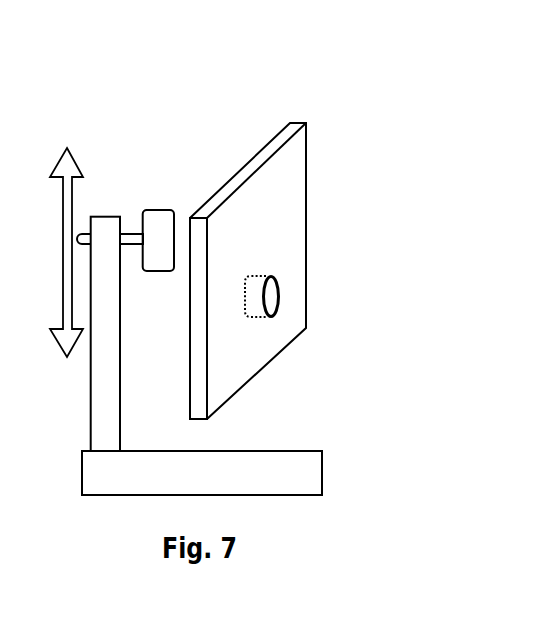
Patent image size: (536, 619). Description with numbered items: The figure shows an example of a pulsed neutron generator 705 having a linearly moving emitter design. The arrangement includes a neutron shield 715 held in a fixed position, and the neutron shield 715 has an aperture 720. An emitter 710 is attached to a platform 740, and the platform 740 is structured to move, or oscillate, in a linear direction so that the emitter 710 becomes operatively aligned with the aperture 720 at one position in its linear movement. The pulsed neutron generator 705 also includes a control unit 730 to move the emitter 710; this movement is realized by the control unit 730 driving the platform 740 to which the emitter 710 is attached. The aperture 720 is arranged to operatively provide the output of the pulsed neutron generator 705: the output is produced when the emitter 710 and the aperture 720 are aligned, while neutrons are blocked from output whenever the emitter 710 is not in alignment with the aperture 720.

The pulsed neutron generator 705 is at (349, 86).
The emitter 710 is at (157, 272).
The neutron shield 715 is at (292, 169).
The aperture 720 is at (279, 305).
The control unit 730 is at (322, 472).
The platform 740 is at (135, 232).